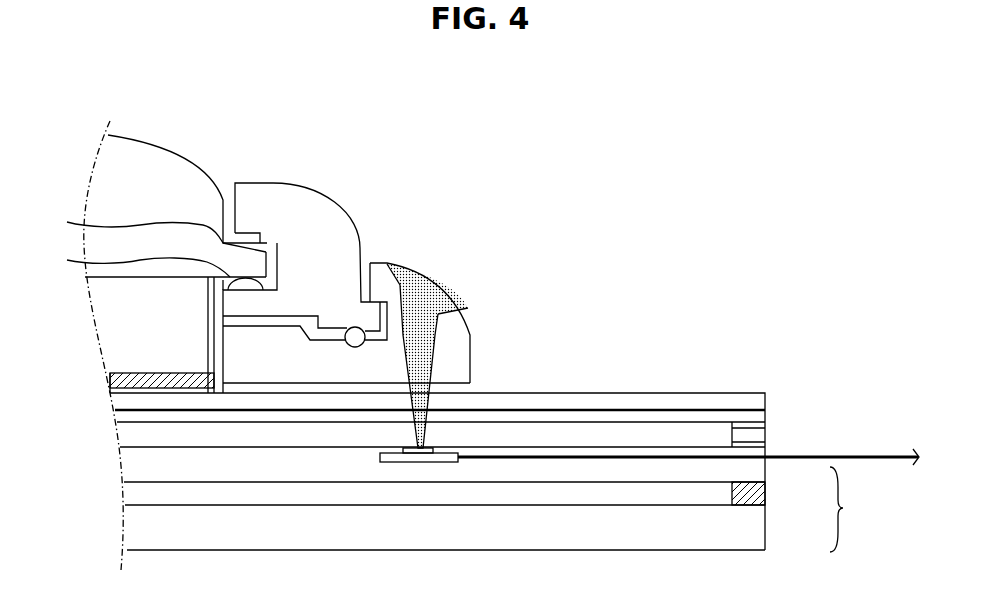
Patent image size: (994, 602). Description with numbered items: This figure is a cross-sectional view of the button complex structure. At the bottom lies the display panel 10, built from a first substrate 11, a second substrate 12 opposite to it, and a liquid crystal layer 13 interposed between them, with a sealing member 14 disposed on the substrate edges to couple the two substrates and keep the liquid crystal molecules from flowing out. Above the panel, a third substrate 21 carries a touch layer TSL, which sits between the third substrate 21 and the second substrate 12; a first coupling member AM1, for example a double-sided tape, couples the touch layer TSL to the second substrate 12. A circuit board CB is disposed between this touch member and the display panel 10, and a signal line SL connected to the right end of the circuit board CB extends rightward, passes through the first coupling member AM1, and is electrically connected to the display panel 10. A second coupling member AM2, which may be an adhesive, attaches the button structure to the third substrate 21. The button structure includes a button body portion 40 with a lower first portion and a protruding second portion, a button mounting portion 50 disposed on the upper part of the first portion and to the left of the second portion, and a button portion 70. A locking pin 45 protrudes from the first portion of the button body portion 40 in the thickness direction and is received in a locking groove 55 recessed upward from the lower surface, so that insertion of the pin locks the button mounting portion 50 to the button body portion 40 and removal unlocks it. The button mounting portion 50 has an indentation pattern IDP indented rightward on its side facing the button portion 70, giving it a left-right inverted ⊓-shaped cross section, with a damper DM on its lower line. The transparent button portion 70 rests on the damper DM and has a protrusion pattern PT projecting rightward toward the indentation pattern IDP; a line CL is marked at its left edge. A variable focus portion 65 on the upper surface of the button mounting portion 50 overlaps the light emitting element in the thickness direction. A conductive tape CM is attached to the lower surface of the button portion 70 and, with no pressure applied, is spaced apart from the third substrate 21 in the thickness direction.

The cutting line CL is at (127, 136).
The button portion 70 is at (158, 166).
The indentation pattern IDP is at (263, 230).
The button mounting portion 50 is at (298, 188).
The locking groove 55 is at (346, 312).
The locking pin 45 is at (358, 336).
The variable focus portion 65 is at (420, 287).
The button body portion 40 is at (476, 331).
The second coupling member AM2 is at (458, 388).
The third substrate 21 is at (757, 402).
The touch layer TSL is at (760, 413).
The first coupling member AM1 is at (755, 435).
The signal line SL is at (880, 455).
The second substrate 12 is at (755, 470).
The sealing member 14 is at (757, 495).
The liquid crystal layer 13 is at (713, 495).
The first substrate 11 is at (753, 535).
The display panel 10 is at (852, 509).
The circuit board CB is at (440, 462).
The conductive tape CM is at (110, 382).
The damper DM is at (148, 271).
The protrusion pattern PT is at (152, 244).